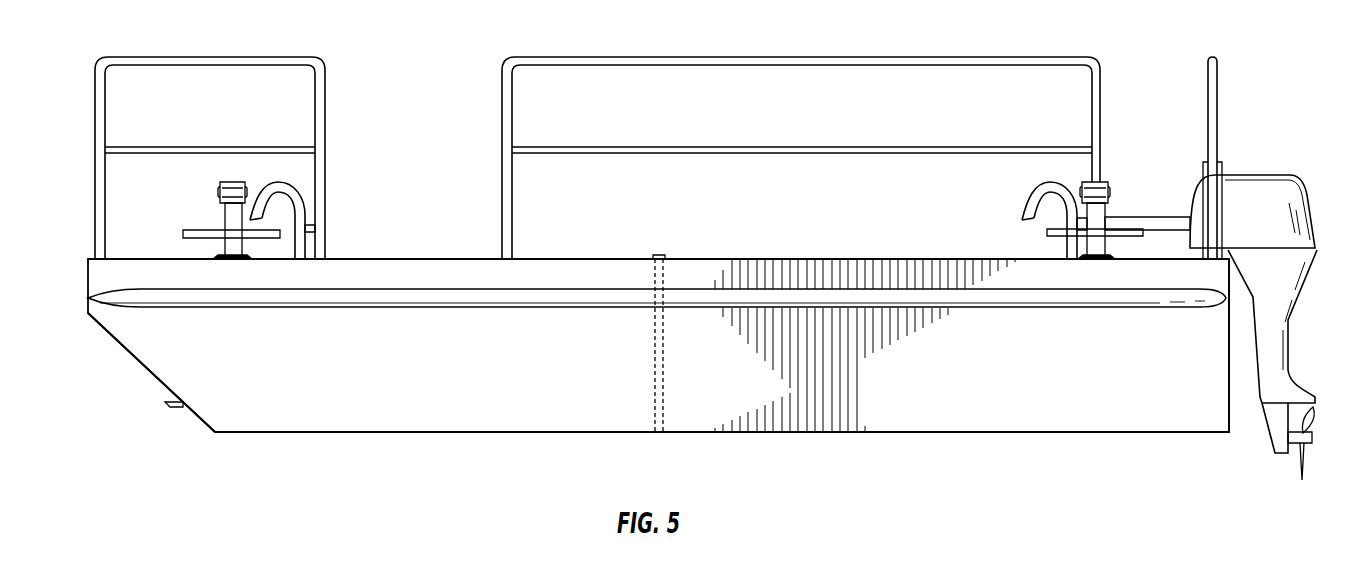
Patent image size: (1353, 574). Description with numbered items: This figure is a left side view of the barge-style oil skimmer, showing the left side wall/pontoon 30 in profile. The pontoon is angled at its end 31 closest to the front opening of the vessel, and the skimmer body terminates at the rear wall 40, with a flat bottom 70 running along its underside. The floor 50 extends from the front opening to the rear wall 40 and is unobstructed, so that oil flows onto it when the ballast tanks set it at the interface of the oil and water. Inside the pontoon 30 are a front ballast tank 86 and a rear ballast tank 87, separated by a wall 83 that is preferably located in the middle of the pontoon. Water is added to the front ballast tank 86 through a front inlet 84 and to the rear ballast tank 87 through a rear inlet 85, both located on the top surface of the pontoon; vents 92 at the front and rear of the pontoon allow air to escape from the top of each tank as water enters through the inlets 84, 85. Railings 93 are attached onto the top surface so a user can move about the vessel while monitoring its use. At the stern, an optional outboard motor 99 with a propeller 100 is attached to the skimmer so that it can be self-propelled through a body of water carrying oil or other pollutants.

The left side wall/pontoon 30 is at (530, 364).
The angled end 31 is at (130, 356).
The rear wall 40 is at (1231, 400).
The floor 50 is at (170, 408).
The bottom 70 is at (500, 432).
The wall 83 is at (658, 355).
The front inlet 84 is at (227, 215).
The rear inlet 85 is at (1105, 208).
The front ballast tank 86 is at (392, 403).
The rear ballast tank 87 is at (979, 408).
The vent 92 is at (293, 192).
The railing 93 is at (202, 57).
The outboard motor 99 is at (1310, 218).
The propeller 100 is at (1315, 425).